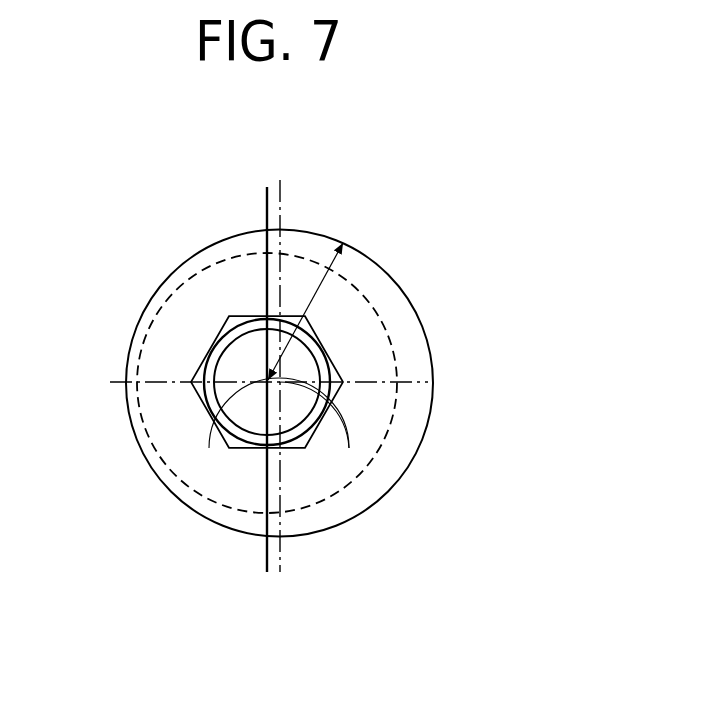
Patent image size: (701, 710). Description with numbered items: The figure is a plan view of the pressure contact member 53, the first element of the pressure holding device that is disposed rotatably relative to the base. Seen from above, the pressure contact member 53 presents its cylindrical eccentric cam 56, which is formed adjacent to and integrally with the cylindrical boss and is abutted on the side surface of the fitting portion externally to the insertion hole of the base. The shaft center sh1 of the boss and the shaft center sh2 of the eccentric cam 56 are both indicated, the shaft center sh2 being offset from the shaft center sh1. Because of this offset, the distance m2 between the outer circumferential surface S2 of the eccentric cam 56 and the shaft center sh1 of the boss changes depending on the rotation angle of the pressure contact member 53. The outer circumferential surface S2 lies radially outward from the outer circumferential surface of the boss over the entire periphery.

The pressure contact member 53 is at (336, 361).
The eccentric cam 56 is at (344, 368).
The outer circumferential surface of the eccentric cam S2 is at (388, 272).
The distance between outer circumferential surface S2 and shaft center sh1 m2 is at (311, 311).
The shaft center of the boss sh1 is at (209, 448).
The shaft center of the eccentric cam sh2 is at (349, 448).